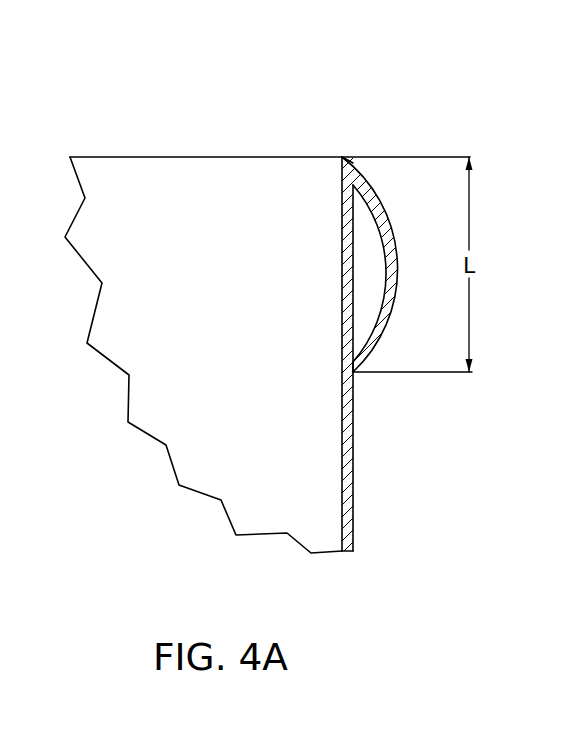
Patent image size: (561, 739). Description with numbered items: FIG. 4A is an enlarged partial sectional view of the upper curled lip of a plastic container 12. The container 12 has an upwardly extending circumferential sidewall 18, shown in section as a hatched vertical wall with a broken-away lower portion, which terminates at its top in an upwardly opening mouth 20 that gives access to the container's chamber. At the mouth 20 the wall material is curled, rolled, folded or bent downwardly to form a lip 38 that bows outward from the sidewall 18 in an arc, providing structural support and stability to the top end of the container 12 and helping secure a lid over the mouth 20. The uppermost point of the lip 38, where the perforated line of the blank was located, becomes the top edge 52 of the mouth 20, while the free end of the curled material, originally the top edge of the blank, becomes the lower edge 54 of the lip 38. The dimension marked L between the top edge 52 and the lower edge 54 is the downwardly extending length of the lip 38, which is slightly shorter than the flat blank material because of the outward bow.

The container 12 is at (280, 314).
The sidewall 18 is at (354, 477).
The mouth 20 is at (184, 152).
The lip 38 is at (388, 317).
The top edge 52 is at (344, 157).
The lower edge 54 is at (354, 373).